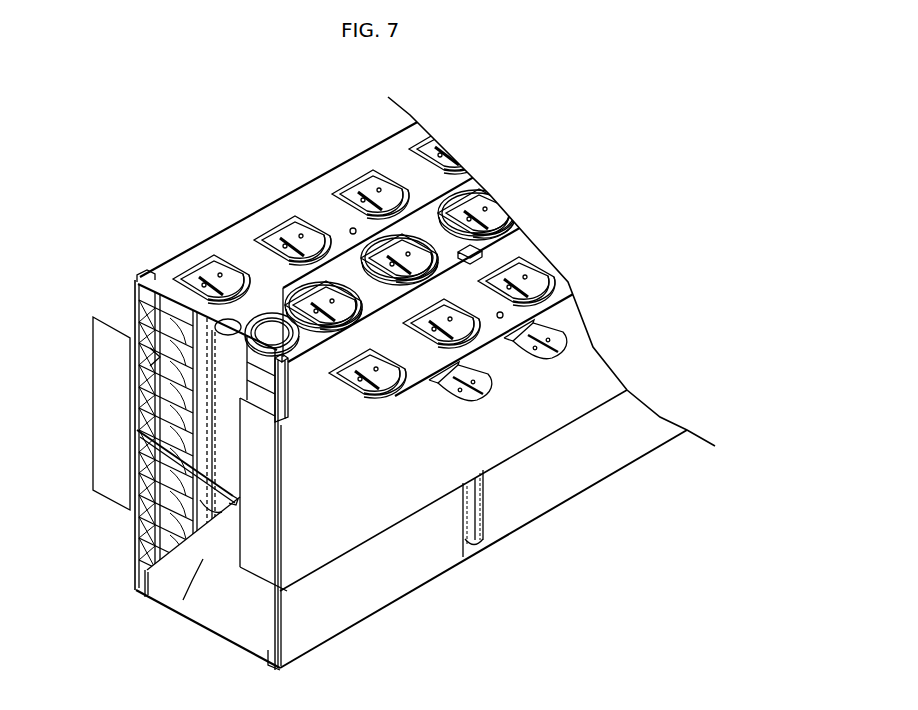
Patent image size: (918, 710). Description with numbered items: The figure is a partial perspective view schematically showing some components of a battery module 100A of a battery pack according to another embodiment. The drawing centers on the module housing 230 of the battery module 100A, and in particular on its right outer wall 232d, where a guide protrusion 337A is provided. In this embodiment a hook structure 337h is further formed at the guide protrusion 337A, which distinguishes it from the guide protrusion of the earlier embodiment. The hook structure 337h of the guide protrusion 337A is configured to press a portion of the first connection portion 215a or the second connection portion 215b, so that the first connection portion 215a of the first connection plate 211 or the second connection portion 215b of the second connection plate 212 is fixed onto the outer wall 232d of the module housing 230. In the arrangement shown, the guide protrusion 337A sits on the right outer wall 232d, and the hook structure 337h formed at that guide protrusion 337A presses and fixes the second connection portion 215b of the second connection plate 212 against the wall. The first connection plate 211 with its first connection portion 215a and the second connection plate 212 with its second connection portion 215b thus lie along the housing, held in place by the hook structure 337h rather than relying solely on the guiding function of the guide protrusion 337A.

The battery module 100A is at (372, 387).
The first connection plate 211 is at (426, 271).
The second connection plate 212 is at (395, 486).
The first connection portion 215a is at (260, 520).
The second connection portion 215b is at (203, 559).
The module housing 230 is at (134, 428).
The outer wall 232d is at (160, 357).
The guide protrusion 337A is at (205, 505).
The hook structure 337h is at (215, 508).